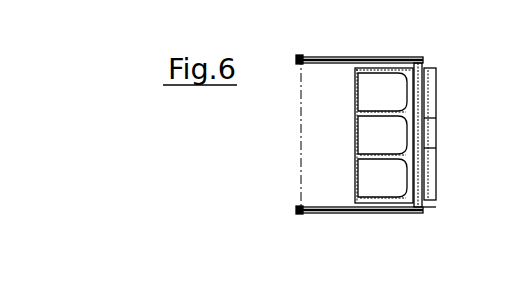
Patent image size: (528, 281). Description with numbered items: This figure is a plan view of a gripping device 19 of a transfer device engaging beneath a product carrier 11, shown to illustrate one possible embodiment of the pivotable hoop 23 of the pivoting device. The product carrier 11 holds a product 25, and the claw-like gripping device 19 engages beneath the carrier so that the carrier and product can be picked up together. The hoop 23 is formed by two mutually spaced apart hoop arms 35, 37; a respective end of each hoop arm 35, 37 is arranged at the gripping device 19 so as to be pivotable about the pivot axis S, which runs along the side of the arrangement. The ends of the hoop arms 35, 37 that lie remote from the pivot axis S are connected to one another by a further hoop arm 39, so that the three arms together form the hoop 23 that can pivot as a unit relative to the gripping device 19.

The product carrier 11 is at (337, 135).
The gripping device 19 is at (436, 153).
The hoop 23 is at (432, 207).
The product 25 is at (343, 91).
The hoop arm 35 is at (330, 60).
The hoop arm 37 is at (344, 214).
The further hoop arm 39 is at (423, 63).
The pivot axis S is at (300, 214).